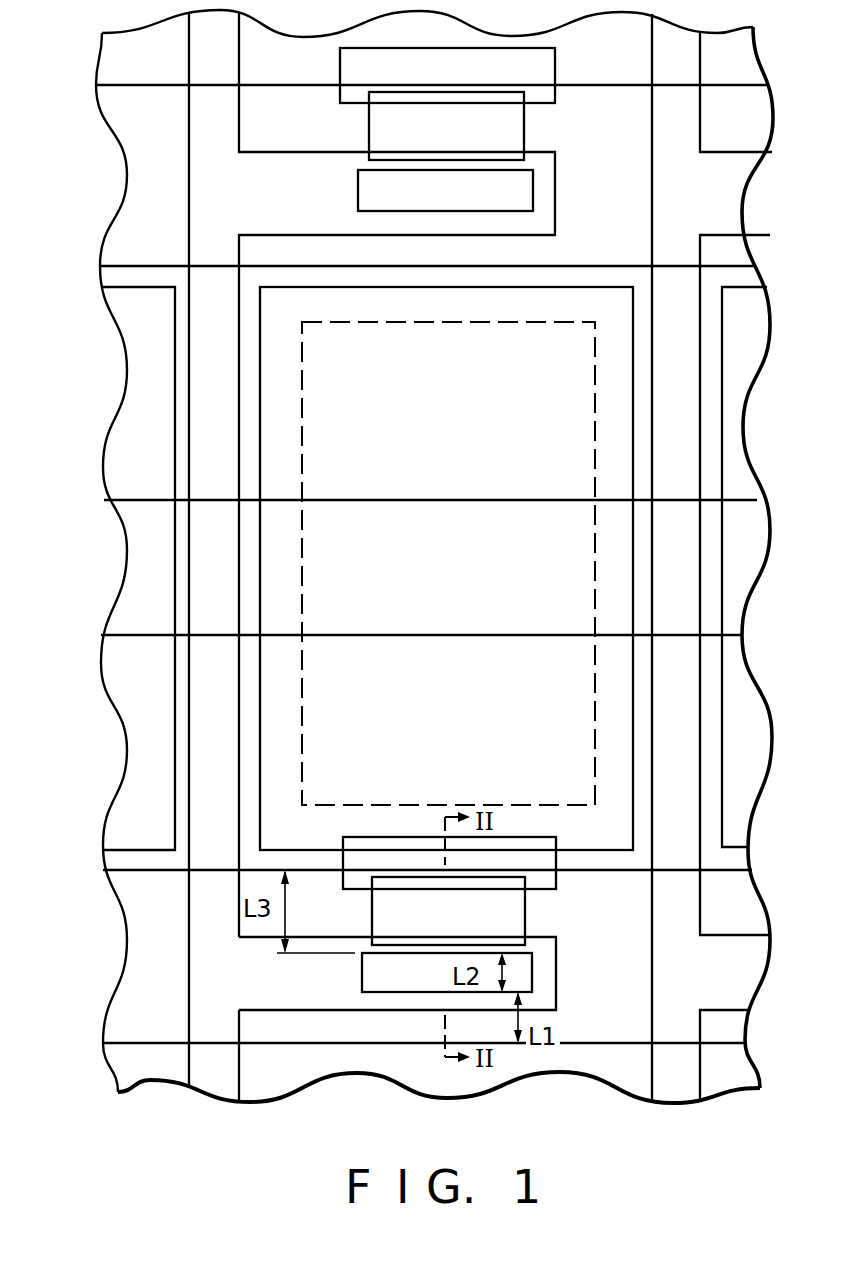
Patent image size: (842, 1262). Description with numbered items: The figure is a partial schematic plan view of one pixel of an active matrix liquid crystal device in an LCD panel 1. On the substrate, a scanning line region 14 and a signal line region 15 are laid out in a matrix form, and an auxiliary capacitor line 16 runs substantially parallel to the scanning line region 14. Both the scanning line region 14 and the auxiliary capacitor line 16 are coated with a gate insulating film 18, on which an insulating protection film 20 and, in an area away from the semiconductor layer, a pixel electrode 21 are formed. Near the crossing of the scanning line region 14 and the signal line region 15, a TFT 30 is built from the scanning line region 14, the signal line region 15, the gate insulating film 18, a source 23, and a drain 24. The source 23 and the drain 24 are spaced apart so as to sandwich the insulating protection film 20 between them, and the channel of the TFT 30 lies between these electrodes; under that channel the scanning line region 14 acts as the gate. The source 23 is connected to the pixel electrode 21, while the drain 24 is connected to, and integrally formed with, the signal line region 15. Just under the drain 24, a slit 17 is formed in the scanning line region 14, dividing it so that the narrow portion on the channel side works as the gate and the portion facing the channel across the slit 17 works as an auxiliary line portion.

The LCD panel 1 is at (80, 423).
The scanning line region 14 is at (743, 965).
The signal line region 15 is at (208, 1062).
The auxiliary capacitor line 16 is at (138, 618).
The slit 17 is at (362, 982).
The gate insulating film 18 is at (632, 1000).
The insulating protection film 20 is at (372, 912).
The pixel electrode 21 is at (304, 670).
The source 23 is at (530, 857).
The drain 24 is at (543, 983).
The TFT 30 is at (395, 1096).